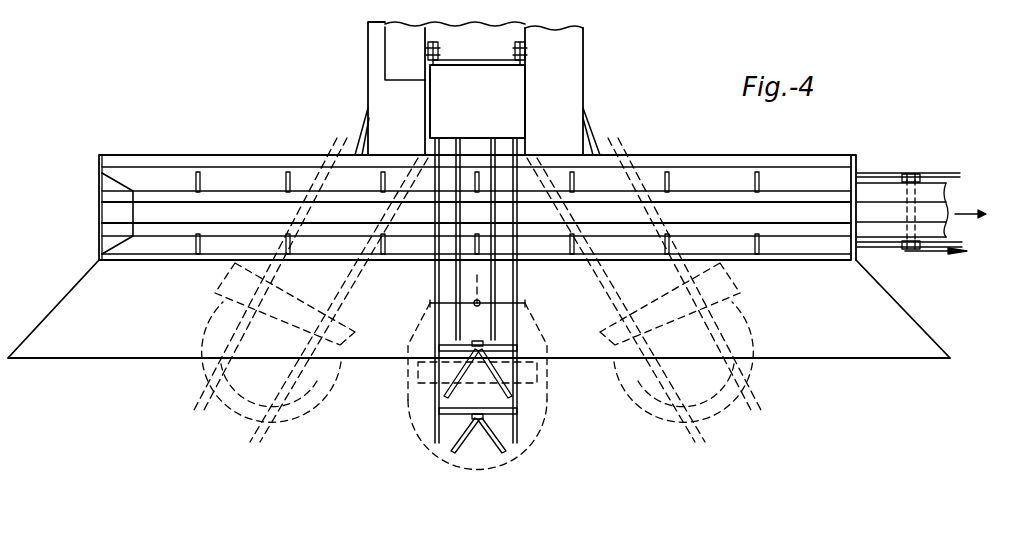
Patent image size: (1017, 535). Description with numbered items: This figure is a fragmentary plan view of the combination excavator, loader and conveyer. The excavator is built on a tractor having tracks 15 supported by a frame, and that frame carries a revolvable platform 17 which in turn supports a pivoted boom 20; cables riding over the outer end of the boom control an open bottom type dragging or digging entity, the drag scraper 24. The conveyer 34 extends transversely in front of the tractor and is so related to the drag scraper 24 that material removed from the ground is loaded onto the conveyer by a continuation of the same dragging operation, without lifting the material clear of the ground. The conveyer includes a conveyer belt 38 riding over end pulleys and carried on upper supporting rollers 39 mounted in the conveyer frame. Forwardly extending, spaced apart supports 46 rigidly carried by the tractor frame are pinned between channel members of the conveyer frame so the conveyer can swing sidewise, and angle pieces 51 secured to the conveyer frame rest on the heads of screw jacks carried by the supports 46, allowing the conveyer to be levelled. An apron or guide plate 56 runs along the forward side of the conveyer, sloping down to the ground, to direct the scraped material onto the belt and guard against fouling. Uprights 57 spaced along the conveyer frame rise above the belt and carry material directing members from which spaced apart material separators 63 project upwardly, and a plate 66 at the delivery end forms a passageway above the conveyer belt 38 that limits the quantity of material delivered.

The tracks 15 is at (368, 50).
The revolvable platform 17 is at (457, 37).
The pivoted boom 20 is at (513, 97).
The drag scraper 24 is at (318, 395).
The conveyer 34 is at (736, 156).
The conveyer belt 38 is at (943, 193).
The upper supporting rollers 39 is at (908, 172).
The supports 46 is at (363, 132).
The angle pieces 51 is at (950, 172).
The apron or guide plate 56 is at (830, 348).
The uprights 57 is at (922, 255).
The material separators 63 is at (287, 178).
The plate 66 is at (848, 228).